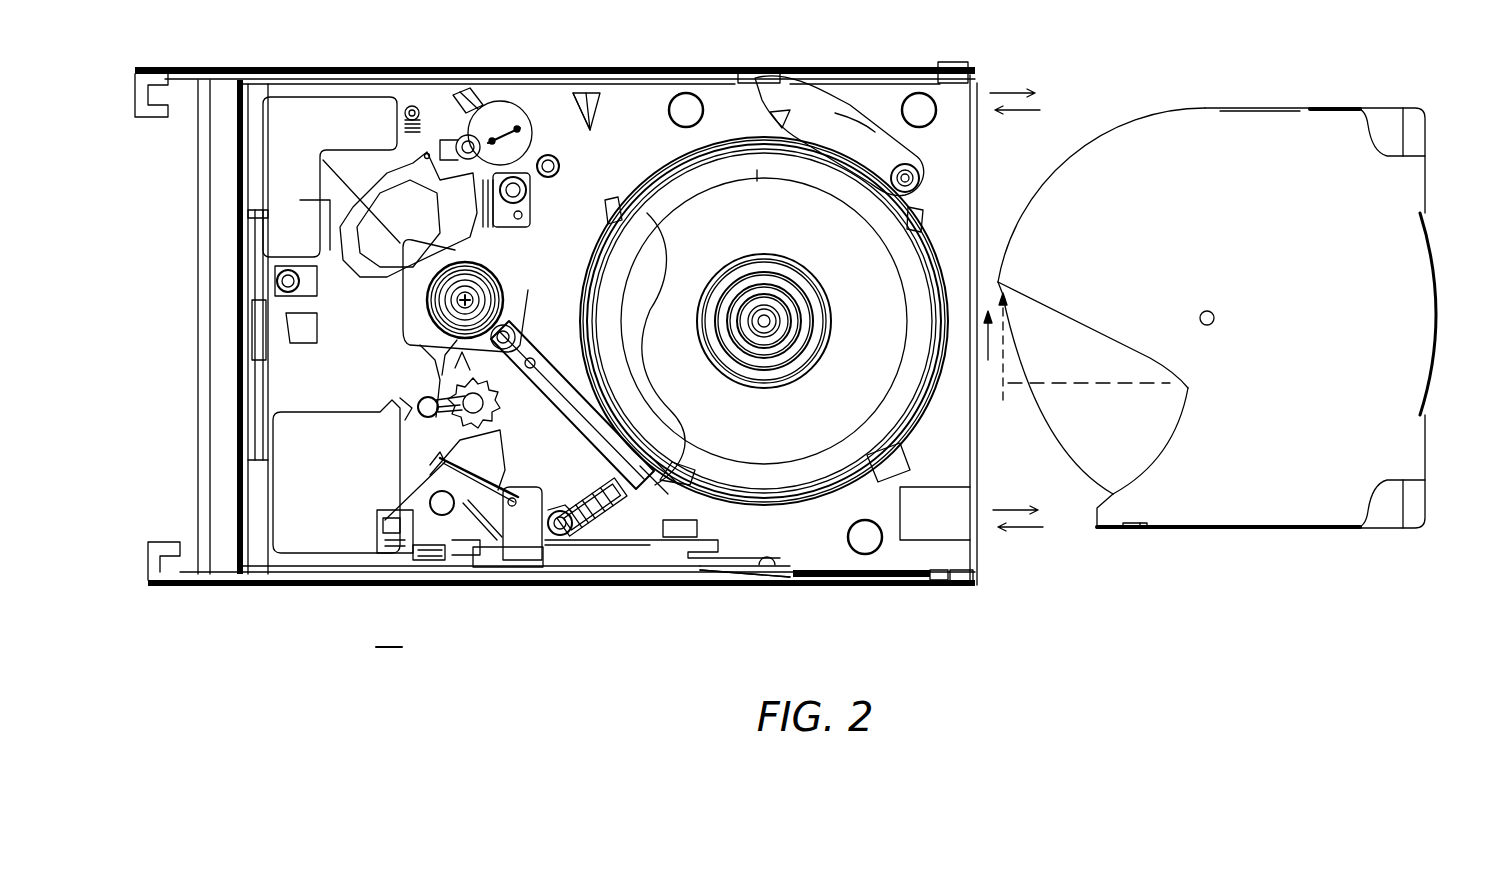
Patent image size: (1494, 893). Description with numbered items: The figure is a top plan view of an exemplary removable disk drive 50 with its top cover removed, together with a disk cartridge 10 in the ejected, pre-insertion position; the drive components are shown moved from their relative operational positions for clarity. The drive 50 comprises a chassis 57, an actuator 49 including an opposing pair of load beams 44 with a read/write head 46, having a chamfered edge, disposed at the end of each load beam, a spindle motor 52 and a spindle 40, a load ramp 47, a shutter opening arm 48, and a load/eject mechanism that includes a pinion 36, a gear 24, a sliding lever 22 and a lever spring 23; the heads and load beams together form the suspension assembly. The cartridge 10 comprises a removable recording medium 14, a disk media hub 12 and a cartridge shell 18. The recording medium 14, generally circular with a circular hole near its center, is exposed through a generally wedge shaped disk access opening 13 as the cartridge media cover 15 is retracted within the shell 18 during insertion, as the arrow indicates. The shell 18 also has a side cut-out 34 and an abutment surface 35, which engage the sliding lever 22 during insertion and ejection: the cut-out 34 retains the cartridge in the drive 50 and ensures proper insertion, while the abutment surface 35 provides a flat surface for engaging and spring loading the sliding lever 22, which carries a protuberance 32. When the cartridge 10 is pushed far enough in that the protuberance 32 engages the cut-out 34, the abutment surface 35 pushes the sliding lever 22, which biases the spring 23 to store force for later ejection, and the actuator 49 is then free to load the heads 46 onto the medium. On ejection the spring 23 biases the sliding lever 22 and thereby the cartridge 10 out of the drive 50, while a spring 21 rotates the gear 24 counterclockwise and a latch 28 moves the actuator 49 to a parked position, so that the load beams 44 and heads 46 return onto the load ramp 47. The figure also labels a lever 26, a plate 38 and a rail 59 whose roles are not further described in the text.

The disk cartridge 10 is at (1280, 108).
The disk media hub 12 is at (1212, 312).
The disk access opening 13 is at (1152, 370).
The removable recording medium 14 is at (1080, 447).
The cartridge media cover 15 is at (1028, 340).
The cartridge shell 18 is at (1146, 150).
The spring 21 is at (418, 408).
The sliding lever 22 is at (575, 553).
The lever spring 23 is at (387, 512).
The gear 24 is at (473, 380).
The lever 26 is at (477, 482).
The latch 28 is at (460, 355).
The protuberance 32 is at (767, 555).
The side cut-out 34 is at (1140, 530).
The abutment surface 35 is at (1110, 530).
The pinion 36 is at (458, 540).
The plate 38 is at (525, 532).
The spindle 40 is at (817, 282).
The load beams 44 is at (545, 357).
The read/write head 46 is at (683, 487).
The load ramp 47 is at (607, 527).
The shutter opening arm 48 is at (848, 108).
The actuator 49 is at (513, 273).
The removable disk drive 50 is at (556, 355).
The spindle motor 52 is at (716, 233).
The chassis 57 is at (555, 112).
The bottom rail 59 is at (750, 585).